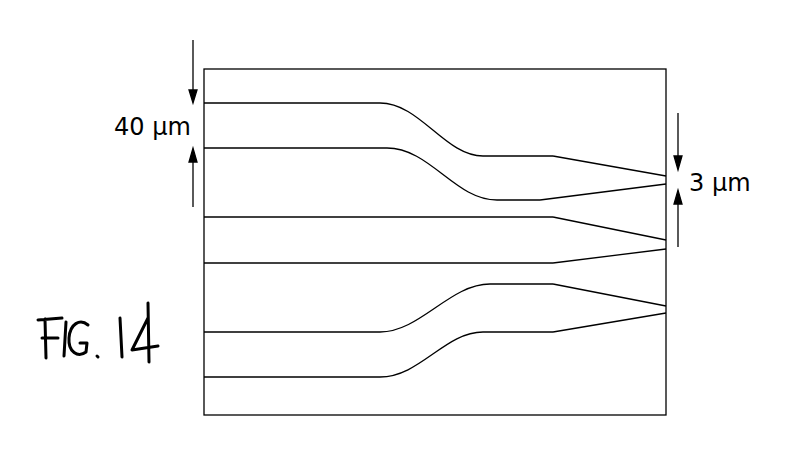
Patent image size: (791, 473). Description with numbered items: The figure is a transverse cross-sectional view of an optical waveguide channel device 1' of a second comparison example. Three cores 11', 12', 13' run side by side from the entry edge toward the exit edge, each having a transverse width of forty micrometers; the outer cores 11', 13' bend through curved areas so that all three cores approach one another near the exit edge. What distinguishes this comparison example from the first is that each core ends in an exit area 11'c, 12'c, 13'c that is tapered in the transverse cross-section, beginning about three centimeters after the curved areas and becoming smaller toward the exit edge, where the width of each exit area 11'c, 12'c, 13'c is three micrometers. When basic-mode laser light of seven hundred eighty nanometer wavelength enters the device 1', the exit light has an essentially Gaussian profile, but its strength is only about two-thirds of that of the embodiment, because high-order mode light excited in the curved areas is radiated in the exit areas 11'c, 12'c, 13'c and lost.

The optical waveguide channel device 1' is at (435, 209).
The core 11' is at (378, 141).
The exit area 11'c is at (603, 154).
The core 12' is at (378, 213).
The exit area 12'c is at (609, 232).
The core 13' is at (378, 327).
The exit area 13'c is at (609, 298).